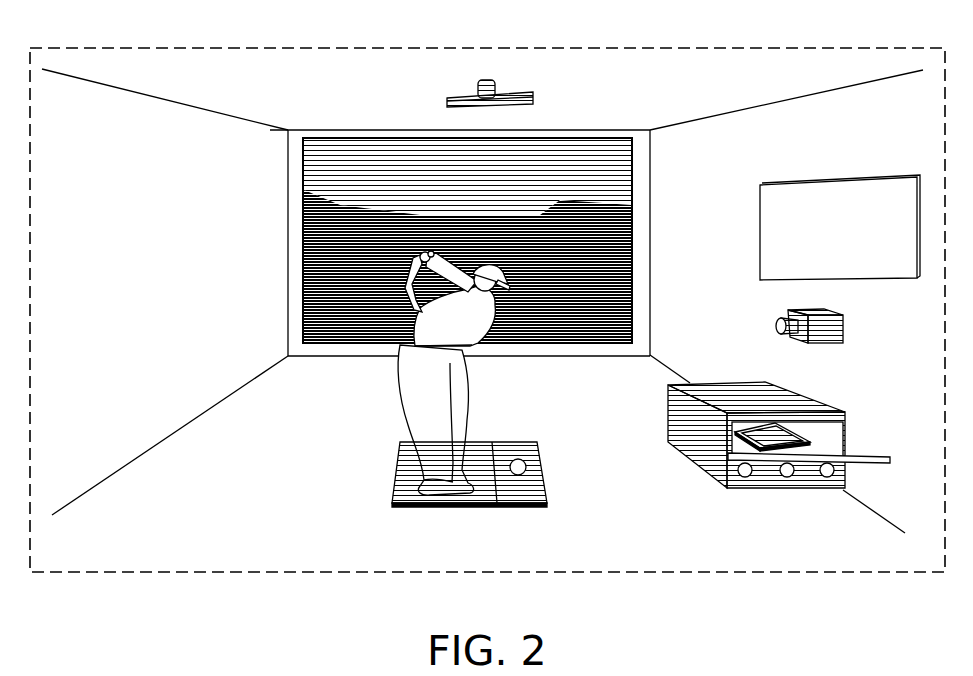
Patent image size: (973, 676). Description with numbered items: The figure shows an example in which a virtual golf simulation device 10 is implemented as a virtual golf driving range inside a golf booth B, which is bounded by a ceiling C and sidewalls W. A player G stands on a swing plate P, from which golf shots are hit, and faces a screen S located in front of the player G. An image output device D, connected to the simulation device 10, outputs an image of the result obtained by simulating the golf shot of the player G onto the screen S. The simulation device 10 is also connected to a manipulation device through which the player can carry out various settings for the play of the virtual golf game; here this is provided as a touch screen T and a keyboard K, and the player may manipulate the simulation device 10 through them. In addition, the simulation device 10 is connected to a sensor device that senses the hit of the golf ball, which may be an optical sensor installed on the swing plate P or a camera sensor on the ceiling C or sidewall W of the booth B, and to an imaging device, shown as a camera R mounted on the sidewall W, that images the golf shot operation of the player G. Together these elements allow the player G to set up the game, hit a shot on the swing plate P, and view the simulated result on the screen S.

The golf booth B is at (912, 48).
The ceiling C is at (380, 96).
The sidewall W is at (241, 255).
The screen S is at (621, 126).
The image output device D is at (508, 90).
The touch screen T is at (887, 180).
The camera R is at (826, 313).
The virtual golf simulation device 10 is at (830, 406).
The keyboard K is at (797, 440).
The player G is at (420, 427).
The swing plate P is at (468, 508).